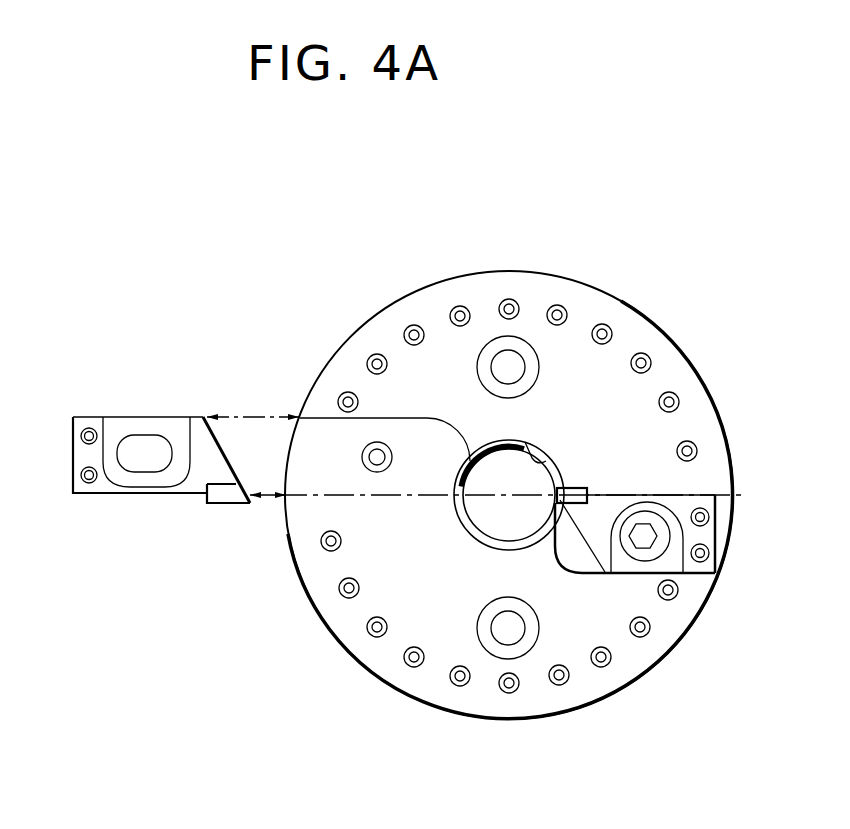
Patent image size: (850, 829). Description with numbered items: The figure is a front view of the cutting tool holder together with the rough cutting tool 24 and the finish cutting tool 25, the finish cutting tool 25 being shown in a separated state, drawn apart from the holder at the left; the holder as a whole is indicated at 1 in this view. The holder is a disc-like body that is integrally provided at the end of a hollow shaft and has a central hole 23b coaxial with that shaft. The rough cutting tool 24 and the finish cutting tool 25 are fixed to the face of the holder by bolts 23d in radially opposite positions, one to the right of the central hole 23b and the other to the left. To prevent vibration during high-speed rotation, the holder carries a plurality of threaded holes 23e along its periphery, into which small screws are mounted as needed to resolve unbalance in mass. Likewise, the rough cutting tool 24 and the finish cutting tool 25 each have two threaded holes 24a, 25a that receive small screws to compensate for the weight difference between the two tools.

The rotary index table 1 is at (482, 523).
The central hole 23b is at (540, 463).
The bolts 23d is at (650, 532).
The threaded holes 23e is at (565, 310).
The rough cutting tool 24 is at (578, 503).
The threaded holes 24a is at (716, 514).
The finish cutting tool 25 is at (223, 483).
The threaded holes 25a is at (92, 427).